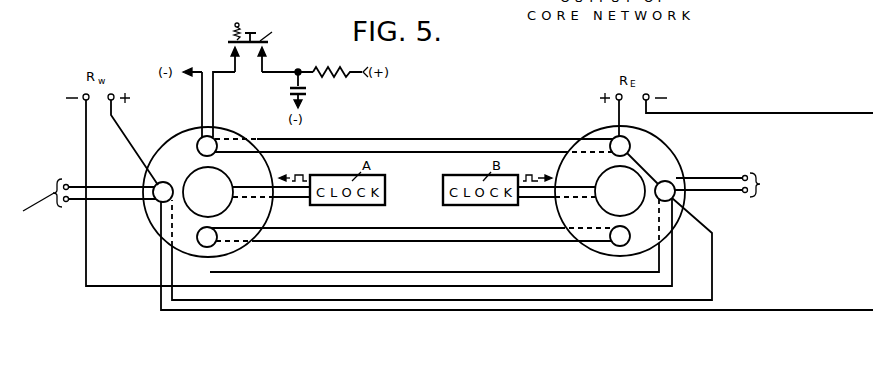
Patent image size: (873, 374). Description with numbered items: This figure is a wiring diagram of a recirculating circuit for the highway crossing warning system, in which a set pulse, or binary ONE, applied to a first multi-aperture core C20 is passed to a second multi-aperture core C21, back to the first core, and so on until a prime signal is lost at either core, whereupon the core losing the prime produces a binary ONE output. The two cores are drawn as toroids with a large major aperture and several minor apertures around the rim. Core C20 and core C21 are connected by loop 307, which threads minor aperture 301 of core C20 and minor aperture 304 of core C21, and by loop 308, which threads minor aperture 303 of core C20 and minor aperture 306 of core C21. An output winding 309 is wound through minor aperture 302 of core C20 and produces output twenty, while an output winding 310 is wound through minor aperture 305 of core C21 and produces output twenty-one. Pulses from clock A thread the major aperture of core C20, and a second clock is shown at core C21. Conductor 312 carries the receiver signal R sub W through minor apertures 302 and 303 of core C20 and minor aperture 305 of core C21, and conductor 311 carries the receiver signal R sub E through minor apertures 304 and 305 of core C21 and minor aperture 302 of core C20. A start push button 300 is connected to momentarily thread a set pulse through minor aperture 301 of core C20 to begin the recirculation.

The start push button 300 is at (267, 25).
The minor aperture 301 is at (222, 129).
The minor aperture 302 is at (155, 200).
The minor aperture 303 is at (207, 248).
The minor aperture 304 is at (630, 144).
The minor aperture 305 is at (678, 198).
The minor aperture 306 is at (613, 242).
The loop 307 is at (405, 139).
The loop 308 is at (390, 228).
The output winding 309 is at (136, 187).
The output winding 310 is at (700, 178).
The conductor 311 is at (712, 285).
The conductor 312 is at (391, 272).
The multi-aperture core C20 is at (162, 238).
The multi-aperture core C21 is at (557, 209).